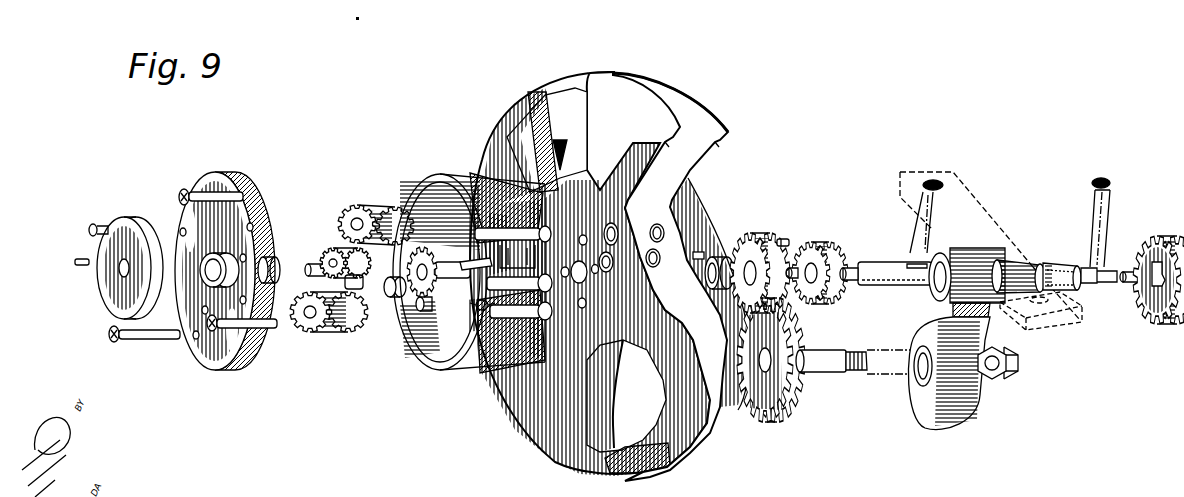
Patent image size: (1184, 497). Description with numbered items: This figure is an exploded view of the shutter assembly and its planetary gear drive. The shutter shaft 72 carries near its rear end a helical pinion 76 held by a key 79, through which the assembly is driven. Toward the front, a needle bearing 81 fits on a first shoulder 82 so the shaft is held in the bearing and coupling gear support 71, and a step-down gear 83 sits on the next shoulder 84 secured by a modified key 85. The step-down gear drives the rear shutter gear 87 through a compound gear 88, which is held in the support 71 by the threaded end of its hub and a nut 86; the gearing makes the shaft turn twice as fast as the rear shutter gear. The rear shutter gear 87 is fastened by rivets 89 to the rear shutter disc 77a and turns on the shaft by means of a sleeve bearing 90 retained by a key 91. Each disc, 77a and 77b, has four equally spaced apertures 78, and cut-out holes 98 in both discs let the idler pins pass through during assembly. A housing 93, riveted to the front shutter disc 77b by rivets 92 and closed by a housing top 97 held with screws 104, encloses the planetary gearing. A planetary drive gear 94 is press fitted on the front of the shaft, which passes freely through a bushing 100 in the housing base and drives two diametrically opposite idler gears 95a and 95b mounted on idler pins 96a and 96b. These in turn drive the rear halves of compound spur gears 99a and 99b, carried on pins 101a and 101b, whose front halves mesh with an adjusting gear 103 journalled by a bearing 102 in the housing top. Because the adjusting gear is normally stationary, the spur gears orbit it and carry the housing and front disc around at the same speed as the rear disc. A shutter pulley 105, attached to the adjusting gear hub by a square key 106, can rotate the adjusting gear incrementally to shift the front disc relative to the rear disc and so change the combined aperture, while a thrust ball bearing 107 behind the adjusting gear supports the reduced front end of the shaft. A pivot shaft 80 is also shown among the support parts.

The bearing and coupling gear support 71 is at (976, 350).
The shutter shaft 72 is at (1054, 264).
The helical pinion 76 is at (1152, 312).
The rear shutter disc 77a is at (688, 93).
The front shutter disc 77b is at (582, 80).
The apertures 78 is at (682, 460).
The key 79 is at (1103, 180).
The pivot shaft 80 is at (838, 366).
The needle bearing 81 is at (960, 268).
The first shoulder 82 is at (1006, 262).
The step-down gear 83 is at (816, 243).
The next shoulder 84 is at (923, 290).
The modified key 85 is at (940, 183).
The nut 86 is at (1010, 362).
The rear shutter gear 87 is at (762, 216).
The compound gear 88 is at (778, 426).
The rivets 89 is at (783, 238).
The sleeve bearing 90 is at (720, 257).
The key 91 is at (697, 251).
The rivets 92 is at (481, 311).
The housing 93 is at (418, 238).
The planetary drive gear 94 is at (417, 250).
The idler gear 95a is at (392, 298).
The idler gear 95b is at (437, 318).
The idler pin 96a is at (538, 350).
The idler pin 96b is at (530, 262).
The housing top 97 is at (215, 183).
The cut-out holes 98 is at (610, 226).
The compound spur gear 99a is at (312, 332).
The compound spur gear 99b is at (355, 213).
The bushing 100 is at (478, 268).
The pin 101a is at (482, 176).
The pin 101b is at (480, 384).
The bearing 102 is at (272, 256).
The adjusting gear 103 is at (340, 250).
The screws 104 is at (193, 188).
The shutter pulley 105 is at (122, 228).
The square key 106 is at (78, 258).
The thrust ball bearing 107 is at (352, 283).